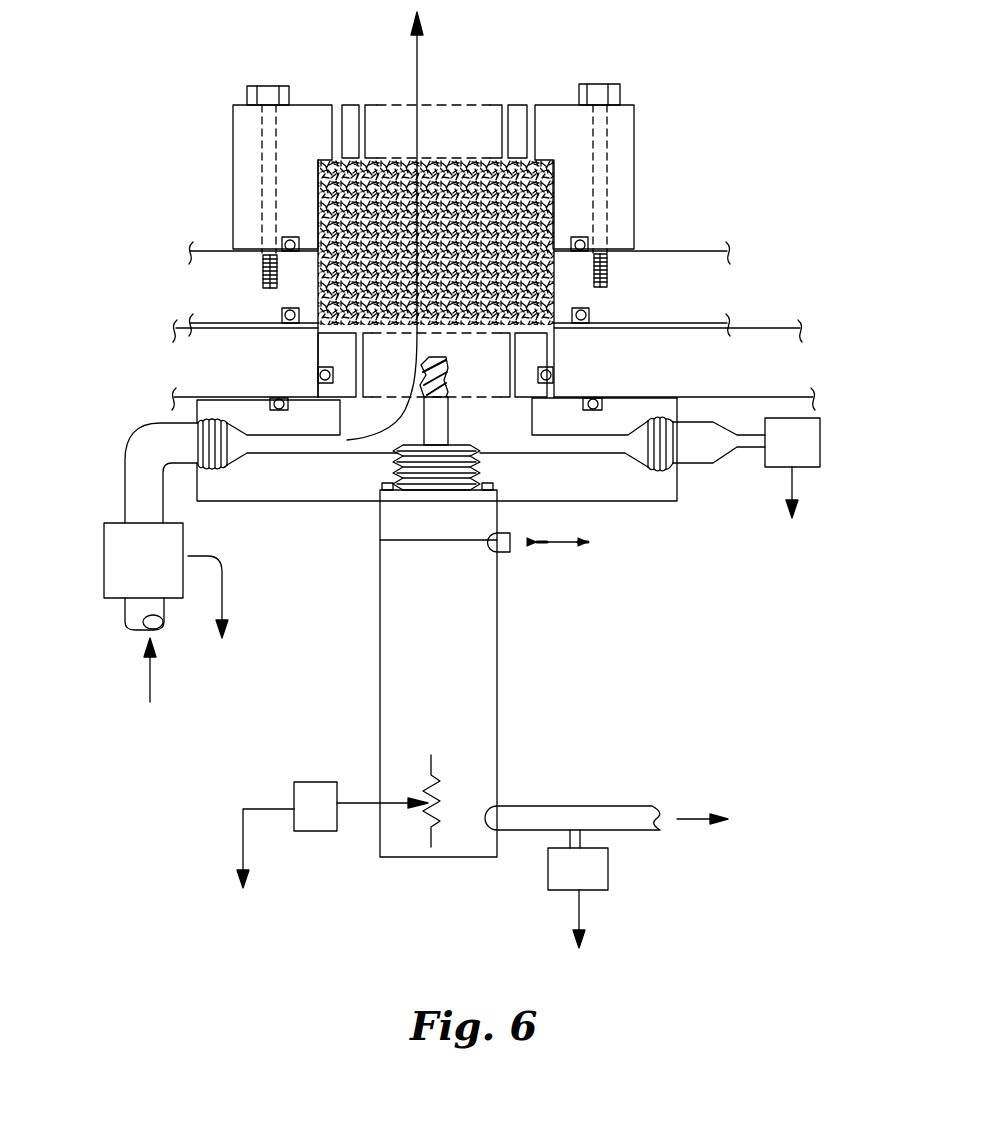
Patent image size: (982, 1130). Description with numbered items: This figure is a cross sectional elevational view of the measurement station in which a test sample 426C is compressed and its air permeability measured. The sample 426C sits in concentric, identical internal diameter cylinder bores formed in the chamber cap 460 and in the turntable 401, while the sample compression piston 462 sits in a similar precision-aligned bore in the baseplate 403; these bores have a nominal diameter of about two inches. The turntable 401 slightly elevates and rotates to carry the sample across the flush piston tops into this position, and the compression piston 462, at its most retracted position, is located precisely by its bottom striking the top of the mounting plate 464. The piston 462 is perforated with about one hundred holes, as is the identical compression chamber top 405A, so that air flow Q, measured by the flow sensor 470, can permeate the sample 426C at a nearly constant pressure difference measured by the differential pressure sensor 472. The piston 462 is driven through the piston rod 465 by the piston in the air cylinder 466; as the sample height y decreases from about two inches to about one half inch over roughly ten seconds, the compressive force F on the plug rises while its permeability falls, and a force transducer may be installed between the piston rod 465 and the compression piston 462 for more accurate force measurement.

The compression chamber top 405A is at (538, 60).
The chamber cap 460 is at (634, 122).
The test sample entity 426C is at (366, 208).
The turntable 401 is at (700, 251).
The baseplate 403 is at (777, 320).
The sample compression piston 462 is at (347, 349).
The mounting plate 464 is at (195, 412).
The piston rod 465 is at (448, 422).
The air cylinder 466 is at (497, 668).
The flow sensor 470 is at (183, 533).
The differential pressure sensor 472 is at (773, 467).